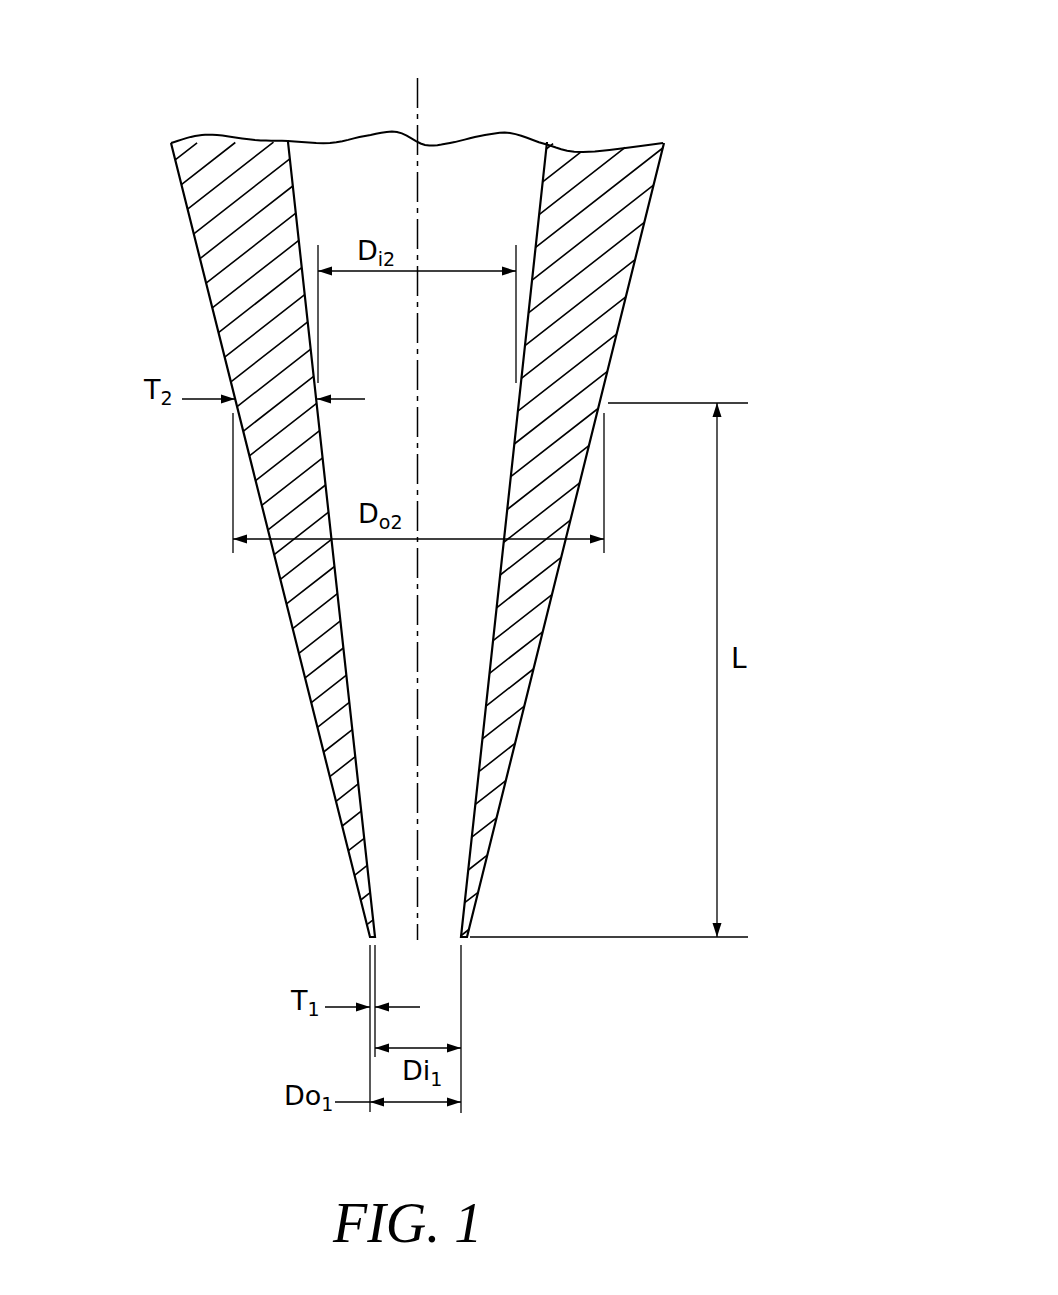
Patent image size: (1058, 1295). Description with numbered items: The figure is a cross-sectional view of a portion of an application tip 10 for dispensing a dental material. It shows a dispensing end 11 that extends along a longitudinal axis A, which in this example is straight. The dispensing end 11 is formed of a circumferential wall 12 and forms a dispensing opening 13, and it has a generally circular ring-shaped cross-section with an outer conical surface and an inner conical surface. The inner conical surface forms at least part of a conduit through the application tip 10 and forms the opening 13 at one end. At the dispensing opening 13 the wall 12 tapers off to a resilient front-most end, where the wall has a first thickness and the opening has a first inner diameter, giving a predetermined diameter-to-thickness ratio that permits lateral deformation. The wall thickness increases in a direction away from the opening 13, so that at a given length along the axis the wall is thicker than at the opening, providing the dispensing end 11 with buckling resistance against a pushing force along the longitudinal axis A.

The application tip 10 is at (413, 516).
The dispensing end 11 is at (203, 273).
The circumferential wall 12 is at (597, 272).
The dispensing opening 13 is at (438, 937).
The longitudinal axis A is at (418, 93).